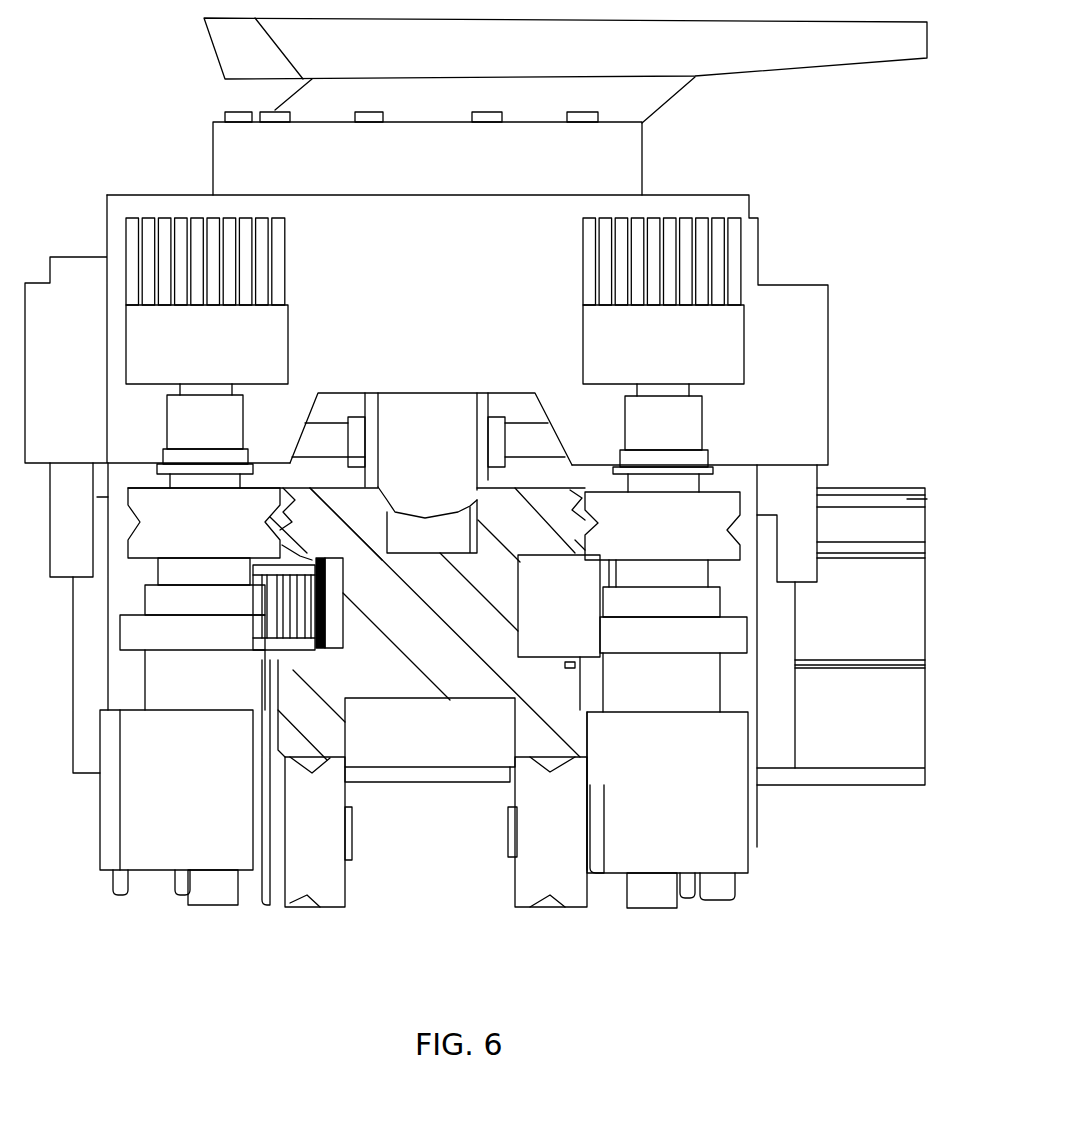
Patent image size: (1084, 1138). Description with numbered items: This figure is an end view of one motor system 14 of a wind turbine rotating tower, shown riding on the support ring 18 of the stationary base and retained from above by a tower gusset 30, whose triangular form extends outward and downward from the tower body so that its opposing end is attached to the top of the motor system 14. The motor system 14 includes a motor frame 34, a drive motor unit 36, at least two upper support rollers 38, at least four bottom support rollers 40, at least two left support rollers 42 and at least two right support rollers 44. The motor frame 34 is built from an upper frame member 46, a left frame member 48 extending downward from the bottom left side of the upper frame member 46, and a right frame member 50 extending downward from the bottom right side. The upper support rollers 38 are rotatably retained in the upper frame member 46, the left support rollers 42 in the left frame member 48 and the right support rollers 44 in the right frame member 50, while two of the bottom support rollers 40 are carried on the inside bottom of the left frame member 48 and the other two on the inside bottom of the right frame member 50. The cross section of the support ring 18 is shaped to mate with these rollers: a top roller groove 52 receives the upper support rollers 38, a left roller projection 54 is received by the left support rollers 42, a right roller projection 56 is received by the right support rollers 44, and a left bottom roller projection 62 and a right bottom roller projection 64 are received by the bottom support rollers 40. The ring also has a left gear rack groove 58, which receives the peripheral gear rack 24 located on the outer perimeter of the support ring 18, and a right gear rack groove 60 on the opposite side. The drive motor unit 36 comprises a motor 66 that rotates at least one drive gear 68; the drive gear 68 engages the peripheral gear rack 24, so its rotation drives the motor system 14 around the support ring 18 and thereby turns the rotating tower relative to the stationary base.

The motor system 14 is at (117, 120).
The support ring 18 is at (483, 687).
The peripheral gear rack 24 is at (345, 612).
The tower gusset 30 is at (748, 58).
The motor frame 34 is at (778, 252).
The drive motor unit 36 is at (80, 677).
The upper support rollers 38 is at (412, 418).
The bottom support rollers 40 is at (293, 900).
The left support rollers 42 is at (127, 557).
The right support rollers 44 is at (722, 505).
The upper frame member 46 is at (80, 323).
The left frame member 48 is at (87, 765).
The right frame member 50 is at (782, 705).
The top roller groove 52 is at (436, 527).
The left roller projection 54 is at (348, 542).
The right roller projection 56 is at (543, 497).
The left gear rack groove 58 is at (332, 632).
The right gear rack groove 60 is at (582, 583).
The left bottom roller projection 62 is at (288, 748).
The right bottom roller projection 64 is at (555, 752).
The motor 66 is at (83, 588).
The drive gear 68 is at (280, 616).